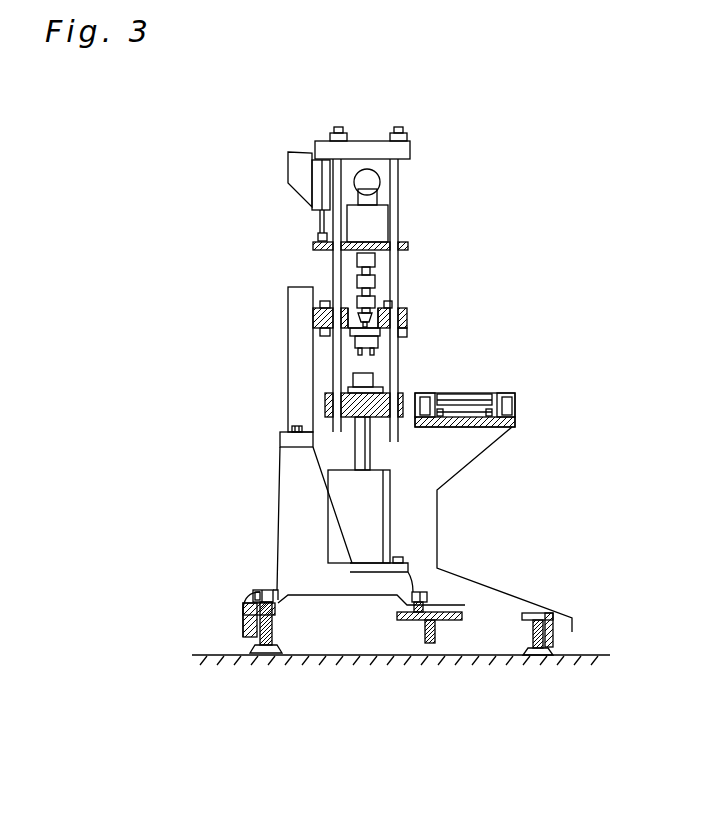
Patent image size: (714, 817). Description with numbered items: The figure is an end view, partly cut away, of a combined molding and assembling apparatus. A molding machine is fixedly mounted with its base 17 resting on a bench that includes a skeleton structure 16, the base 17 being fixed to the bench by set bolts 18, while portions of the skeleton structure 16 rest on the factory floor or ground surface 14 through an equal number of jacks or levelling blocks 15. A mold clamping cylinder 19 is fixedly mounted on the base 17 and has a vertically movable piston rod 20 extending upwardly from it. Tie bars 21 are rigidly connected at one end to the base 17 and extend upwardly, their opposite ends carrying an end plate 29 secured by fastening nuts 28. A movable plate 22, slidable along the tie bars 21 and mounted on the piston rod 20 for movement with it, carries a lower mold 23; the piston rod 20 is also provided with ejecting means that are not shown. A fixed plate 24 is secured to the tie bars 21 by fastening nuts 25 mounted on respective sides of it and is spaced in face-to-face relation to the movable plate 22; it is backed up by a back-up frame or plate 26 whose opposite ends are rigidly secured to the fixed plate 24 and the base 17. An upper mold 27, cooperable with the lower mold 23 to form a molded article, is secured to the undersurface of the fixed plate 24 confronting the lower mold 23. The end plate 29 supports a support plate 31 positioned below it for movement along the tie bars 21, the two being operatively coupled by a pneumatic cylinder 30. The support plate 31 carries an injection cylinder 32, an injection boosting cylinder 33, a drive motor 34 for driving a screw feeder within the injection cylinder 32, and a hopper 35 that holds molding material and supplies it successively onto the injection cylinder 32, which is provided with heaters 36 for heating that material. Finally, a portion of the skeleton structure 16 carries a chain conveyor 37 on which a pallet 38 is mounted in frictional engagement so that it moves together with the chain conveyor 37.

The floor or ground surface 14 is at (450, 663).
The jacks or levelling blocks 15 is at (553, 640).
The skeleton structure 16 is at (512, 424).
The base 17 is at (340, 578).
The set bolts 18 is at (428, 592).
The mold clamping cylinder 19 is at (381, 502).
The piston rod 20 is at (371, 450).
The tie bars 21 is at (357, 262).
The movable plate 22 is at (378, 402).
The lower mold 23 is at (373, 382).
The fixed plate 24 is at (313, 318).
The fastening nuts 25 is at (318, 304).
The back-up frame or plate 26 is at (293, 415).
The upper mold 27 is at (381, 340).
The fastening nuts 28 is at (345, 136).
The end plate 29 is at (402, 151).
The pneumatic cylinder 30 is at (325, 175).
The support plate 31 is at (392, 245).
The injection cylinder 32 is at (376, 282).
The injection boosting cylinder 33 is at (379, 215).
The drive motor 34 is at (377, 176).
The hopper 35 is at (302, 175).
The heaters 36 is at (355, 298).
The chain conveyor 37 is at (516, 407).
The pallet 38 is at (473, 398).